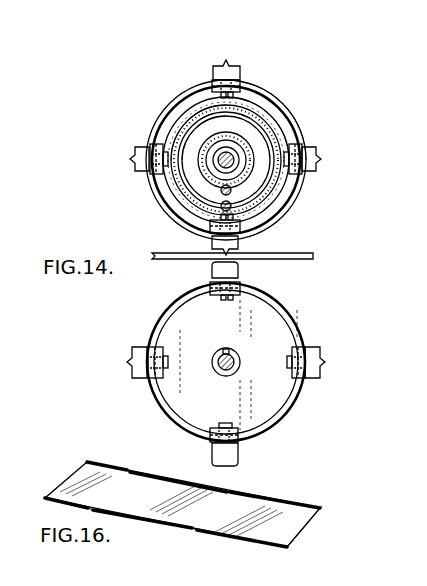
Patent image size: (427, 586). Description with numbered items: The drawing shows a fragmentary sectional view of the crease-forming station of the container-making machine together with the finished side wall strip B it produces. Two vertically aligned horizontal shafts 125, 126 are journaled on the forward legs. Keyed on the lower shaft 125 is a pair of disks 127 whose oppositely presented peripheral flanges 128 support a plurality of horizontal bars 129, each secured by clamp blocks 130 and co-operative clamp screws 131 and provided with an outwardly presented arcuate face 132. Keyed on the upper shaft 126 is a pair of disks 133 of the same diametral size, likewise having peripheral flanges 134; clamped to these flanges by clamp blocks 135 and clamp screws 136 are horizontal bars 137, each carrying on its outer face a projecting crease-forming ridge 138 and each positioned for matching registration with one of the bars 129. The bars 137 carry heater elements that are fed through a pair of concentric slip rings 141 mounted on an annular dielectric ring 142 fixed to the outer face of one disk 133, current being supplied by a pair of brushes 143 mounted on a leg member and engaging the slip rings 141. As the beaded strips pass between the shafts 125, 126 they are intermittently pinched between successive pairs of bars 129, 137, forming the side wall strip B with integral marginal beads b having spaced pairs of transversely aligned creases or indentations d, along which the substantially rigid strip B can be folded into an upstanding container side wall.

In FIG. 14, the horizontal shaft 125 is at (233, 355).
In FIG. 14, the horizontal shaft 126 is at (228, 157).
In FIG. 14, the disk 127 is at (280, 328).
In FIG. 14, the peripheral flange 128 is at (293, 405).
In FIG. 14, the horizontal bar 129 is at (240, 273).
In FIG. 14, the clamp block 130 is at (243, 298).
In FIG. 14, the clamp screw 131 is at (227, 423).
In FIG. 14, the arcuate face 132 is at (243, 254).
In FIG. 14, the disk 133 is at (280, 128).
In FIG. 14, the peripheral flange 134 is at (296, 131).
In FIG. 14, the clamp block 135 is at (231, 89).
In FIG. 14, the clamp screw 136 is at (241, 102).
In FIG. 14, the horizontal bar 137 is at (240, 69).
In FIG. 14, the crease-forming ridge 138 is at (226, 61).
In FIG. 14, the slip ring 141 is at (202, 120).
In FIG. 14, the annular dielectric ring 142 is at (183, 124).
In FIG. 14, the brush 143 is at (226, 190).
In FIG. 14, the side wall strip B is at (244, 258).
In FIG. 16, the side wall strip B is at (293, 525).
In FIG. 16, the bead b is at (303, 503).
In FIG. 16, the crease or indentation d is at (277, 500).